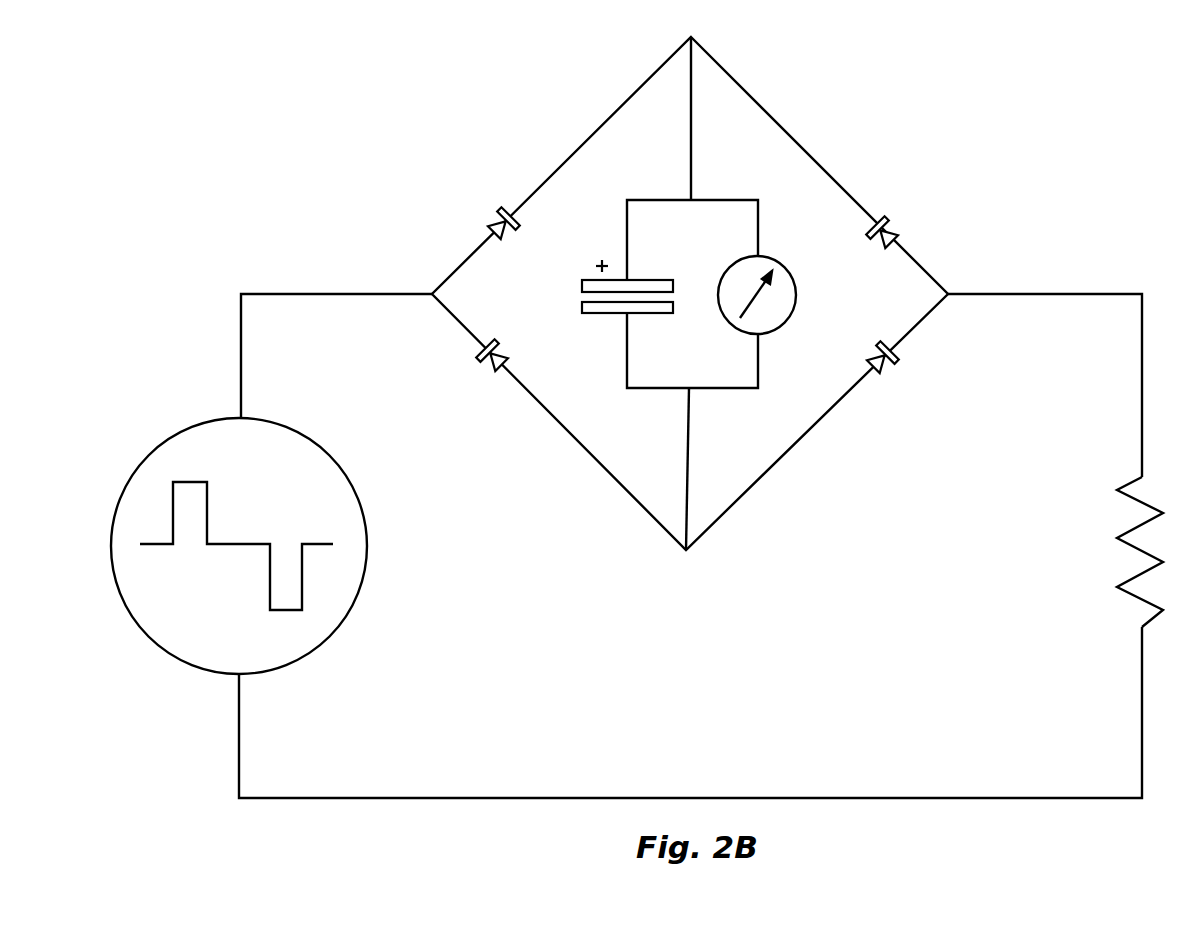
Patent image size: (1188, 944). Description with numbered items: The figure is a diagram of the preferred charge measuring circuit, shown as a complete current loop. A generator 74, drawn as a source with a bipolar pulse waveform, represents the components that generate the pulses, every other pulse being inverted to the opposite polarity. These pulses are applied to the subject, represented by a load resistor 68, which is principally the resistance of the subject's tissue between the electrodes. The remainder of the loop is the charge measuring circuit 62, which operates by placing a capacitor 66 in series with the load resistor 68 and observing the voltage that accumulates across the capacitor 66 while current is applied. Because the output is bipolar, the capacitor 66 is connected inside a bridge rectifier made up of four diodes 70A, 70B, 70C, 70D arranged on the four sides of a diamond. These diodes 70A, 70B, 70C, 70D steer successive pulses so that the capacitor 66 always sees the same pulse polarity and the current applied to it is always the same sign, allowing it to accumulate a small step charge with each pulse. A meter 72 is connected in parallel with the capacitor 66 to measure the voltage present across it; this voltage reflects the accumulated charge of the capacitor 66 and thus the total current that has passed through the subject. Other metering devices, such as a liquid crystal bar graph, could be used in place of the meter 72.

The charge measuring circuit 62 is at (852, 165).
The capacitor 66 is at (612, 315).
The load resistor 68 is at (1133, 548).
The diode 70A is at (498, 218).
The diode 70B is at (496, 372).
The diode 70C is at (895, 229).
The diode 70D is at (884, 378).
The meter 72 is at (788, 320).
The generator 74 is at (345, 617).